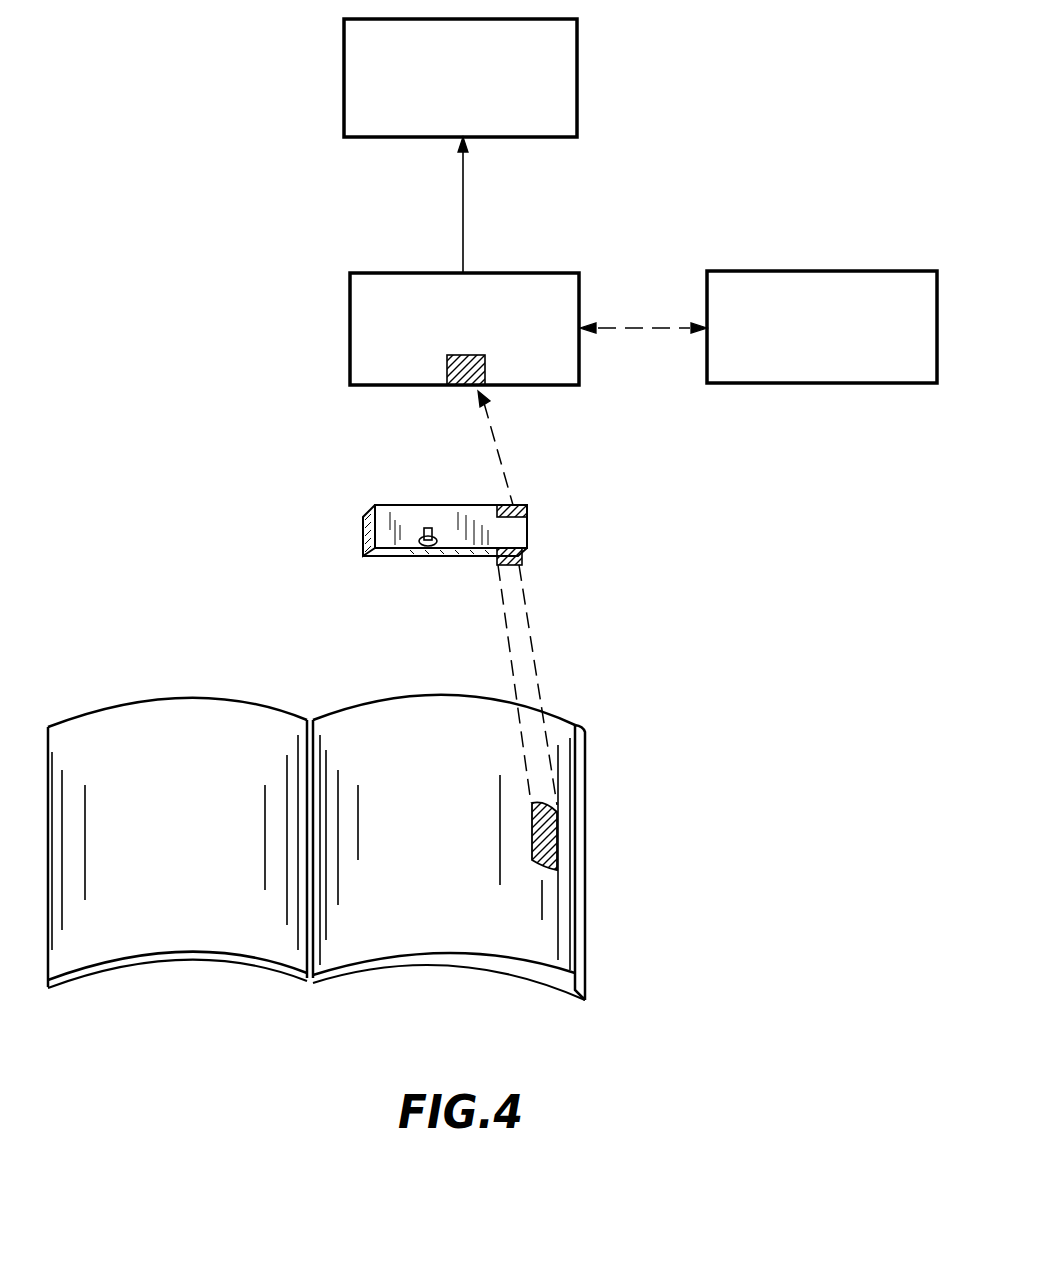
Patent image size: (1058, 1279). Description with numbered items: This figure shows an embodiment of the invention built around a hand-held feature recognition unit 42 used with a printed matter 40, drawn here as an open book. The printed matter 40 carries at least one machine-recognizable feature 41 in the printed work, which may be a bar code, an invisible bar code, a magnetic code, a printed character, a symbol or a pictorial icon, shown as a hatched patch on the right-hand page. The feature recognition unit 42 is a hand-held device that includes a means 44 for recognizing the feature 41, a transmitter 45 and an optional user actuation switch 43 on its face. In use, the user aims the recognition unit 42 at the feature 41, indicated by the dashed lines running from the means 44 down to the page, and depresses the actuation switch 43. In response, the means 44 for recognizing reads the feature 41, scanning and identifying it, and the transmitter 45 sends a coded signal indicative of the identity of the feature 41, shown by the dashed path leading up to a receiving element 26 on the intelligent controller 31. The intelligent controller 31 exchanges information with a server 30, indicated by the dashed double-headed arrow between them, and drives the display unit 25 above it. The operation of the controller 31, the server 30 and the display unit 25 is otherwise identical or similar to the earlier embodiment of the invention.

The display unit 25 is at (577, 47).
The receiver 26 is at (485, 372).
The server 30 is at (786, 271).
The intelligent controller 31 is at (530, 272).
The printed matter 40 is at (268, 708).
The machine-recognizable feature 41 is at (557, 856).
The feature recognition unit 42 is at (430, 503).
The user actuation switch 43 is at (420, 540).
The means for recognizing 44 is at (520, 562).
The transmitter 45 is at (527, 508).